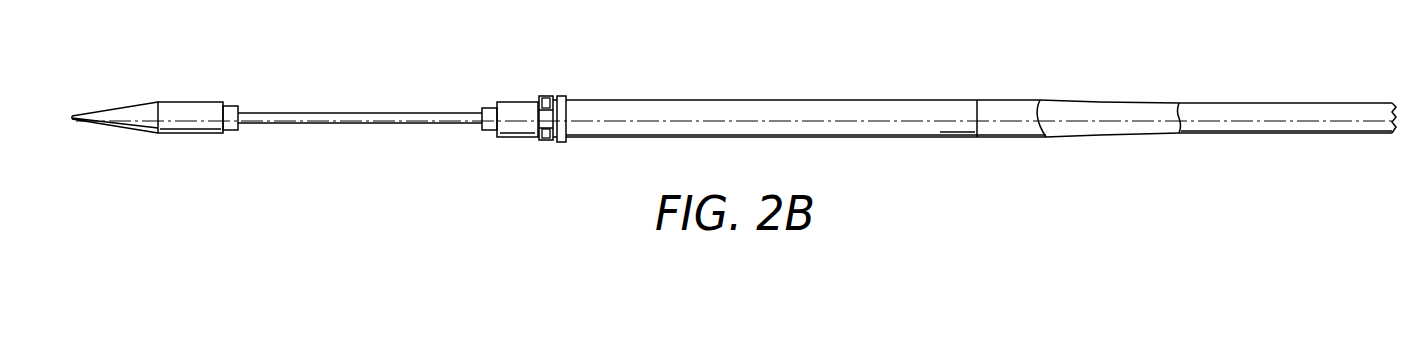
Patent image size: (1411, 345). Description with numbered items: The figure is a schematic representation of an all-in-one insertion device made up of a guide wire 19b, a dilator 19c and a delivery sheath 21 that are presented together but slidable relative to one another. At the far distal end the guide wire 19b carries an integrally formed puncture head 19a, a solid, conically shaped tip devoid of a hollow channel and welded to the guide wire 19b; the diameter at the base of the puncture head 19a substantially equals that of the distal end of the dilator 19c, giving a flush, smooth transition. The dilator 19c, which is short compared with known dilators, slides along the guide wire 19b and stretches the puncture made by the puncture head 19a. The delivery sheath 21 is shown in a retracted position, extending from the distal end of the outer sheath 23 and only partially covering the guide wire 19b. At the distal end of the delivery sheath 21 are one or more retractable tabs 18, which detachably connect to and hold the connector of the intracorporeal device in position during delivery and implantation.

The puncture head 19a is at (118, 113).
The guide wire 19b is at (363, 117).
The dilator 19c is at (191, 110).
The retractable tabs 18 is at (515, 108).
The delivery sheath 21 is at (813, 105).
The outer sheath 23 is at (1238, 107).